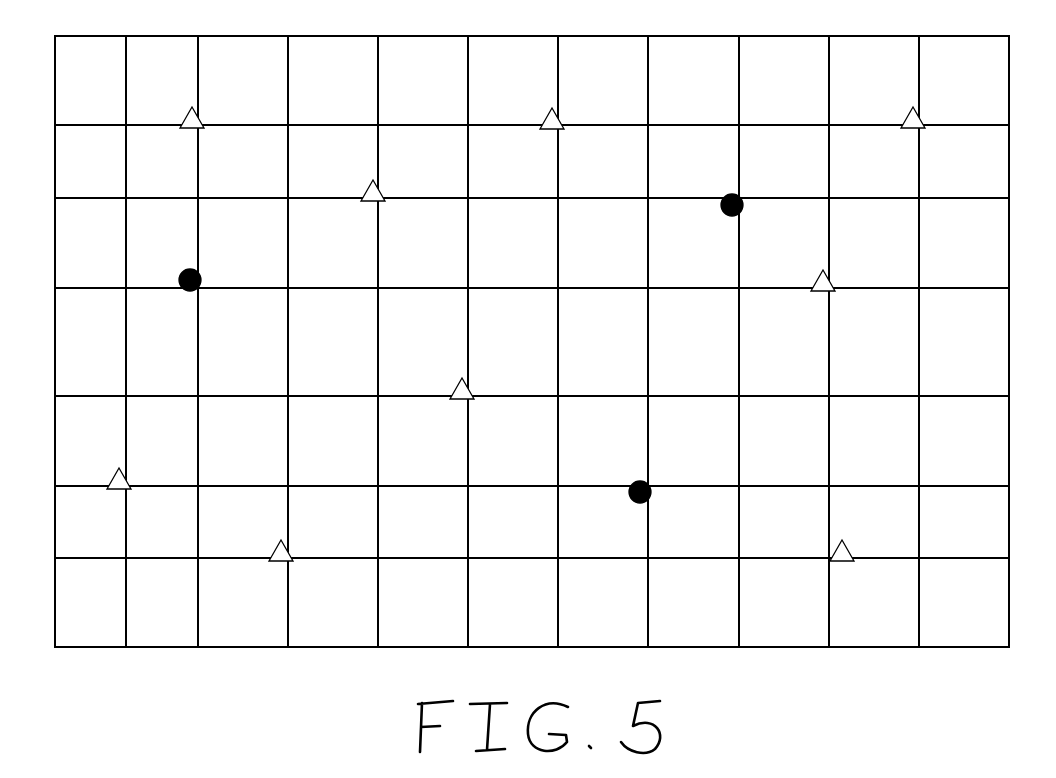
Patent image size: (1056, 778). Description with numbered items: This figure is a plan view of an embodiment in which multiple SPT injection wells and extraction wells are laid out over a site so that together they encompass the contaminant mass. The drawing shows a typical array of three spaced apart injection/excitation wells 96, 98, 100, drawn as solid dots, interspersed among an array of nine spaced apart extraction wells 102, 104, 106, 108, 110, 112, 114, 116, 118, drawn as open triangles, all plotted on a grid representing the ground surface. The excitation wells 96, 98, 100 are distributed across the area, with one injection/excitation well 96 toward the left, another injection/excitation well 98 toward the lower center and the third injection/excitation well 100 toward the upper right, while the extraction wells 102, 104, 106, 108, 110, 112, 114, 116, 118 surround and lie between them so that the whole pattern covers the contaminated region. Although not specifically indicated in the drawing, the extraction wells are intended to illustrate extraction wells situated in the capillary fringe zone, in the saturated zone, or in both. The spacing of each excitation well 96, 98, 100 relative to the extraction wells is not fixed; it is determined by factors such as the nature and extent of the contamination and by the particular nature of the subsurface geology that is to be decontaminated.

The injection/excitation well 96 is at (209, 273).
The injection/excitation well 98 is at (625, 506).
The injection/excitation well 100 is at (713, 190).
The extraction well 102 is at (143, 471).
The extraction well 104 is at (216, 111).
The extraction well 106 is at (397, 183).
The extraction well 108 is at (486, 381).
The extraction well 110 is at (577, 111).
The extraction well 112 is at (305, 542).
The extraction well 114 is at (805, 292).
The extraction well 116 is at (814, 546).
The extraction well 118 is at (886, 131).